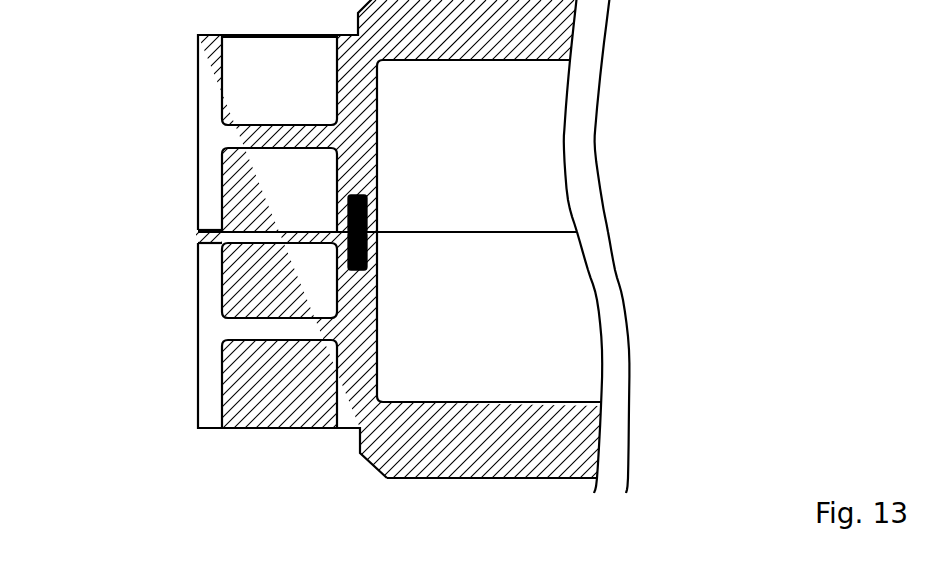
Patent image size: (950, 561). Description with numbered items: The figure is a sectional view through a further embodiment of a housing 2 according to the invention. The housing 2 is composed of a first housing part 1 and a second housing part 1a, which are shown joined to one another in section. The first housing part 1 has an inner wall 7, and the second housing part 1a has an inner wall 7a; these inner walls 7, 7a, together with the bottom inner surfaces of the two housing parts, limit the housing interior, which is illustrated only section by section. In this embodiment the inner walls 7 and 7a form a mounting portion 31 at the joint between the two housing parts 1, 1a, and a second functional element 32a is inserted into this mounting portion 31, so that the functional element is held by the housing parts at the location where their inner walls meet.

The housing 2 is at (72, 41).
The second housing part 1a is at (198, 146).
The second functional element 32a is at (341, 220).
The mounting portion 31 is at (340, 268).
The first housing part 1 is at (198, 293).
The inner wall of the second housing part 7a is at (378, 143).
The inner wall of the first housing part 7 is at (378, 323).